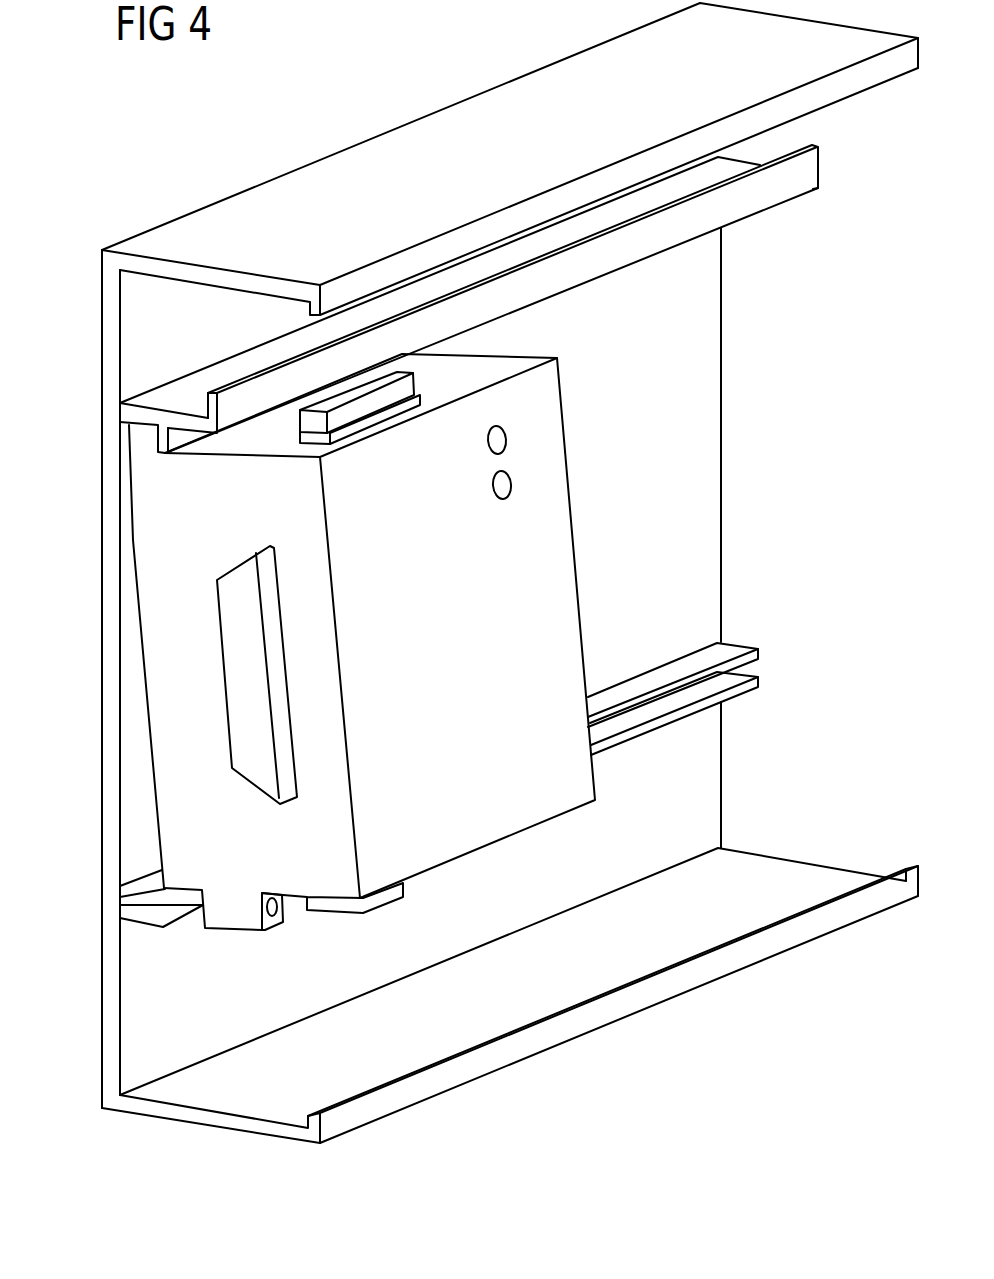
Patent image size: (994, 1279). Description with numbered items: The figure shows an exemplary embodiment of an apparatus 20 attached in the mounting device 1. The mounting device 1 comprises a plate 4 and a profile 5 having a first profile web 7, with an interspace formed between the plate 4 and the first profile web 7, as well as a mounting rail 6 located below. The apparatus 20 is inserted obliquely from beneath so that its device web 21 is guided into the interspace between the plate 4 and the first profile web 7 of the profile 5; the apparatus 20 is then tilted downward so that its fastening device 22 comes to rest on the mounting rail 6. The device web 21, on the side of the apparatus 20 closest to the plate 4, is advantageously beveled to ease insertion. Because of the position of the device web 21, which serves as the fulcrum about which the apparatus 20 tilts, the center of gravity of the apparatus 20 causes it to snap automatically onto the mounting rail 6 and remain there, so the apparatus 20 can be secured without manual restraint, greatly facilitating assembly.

The mounting device 1 is at (293, 172).
The plate 4 is at (112, 577).
The profile 5 is at (137, 413).
The mounting rail 6 is at (132, 893).
The first profile web 7 is at (162, 455).
The apparatus 20 is at (148, 723).
The device web 21 is at (143, 442).
The fastening device 22 is at (233, 912).